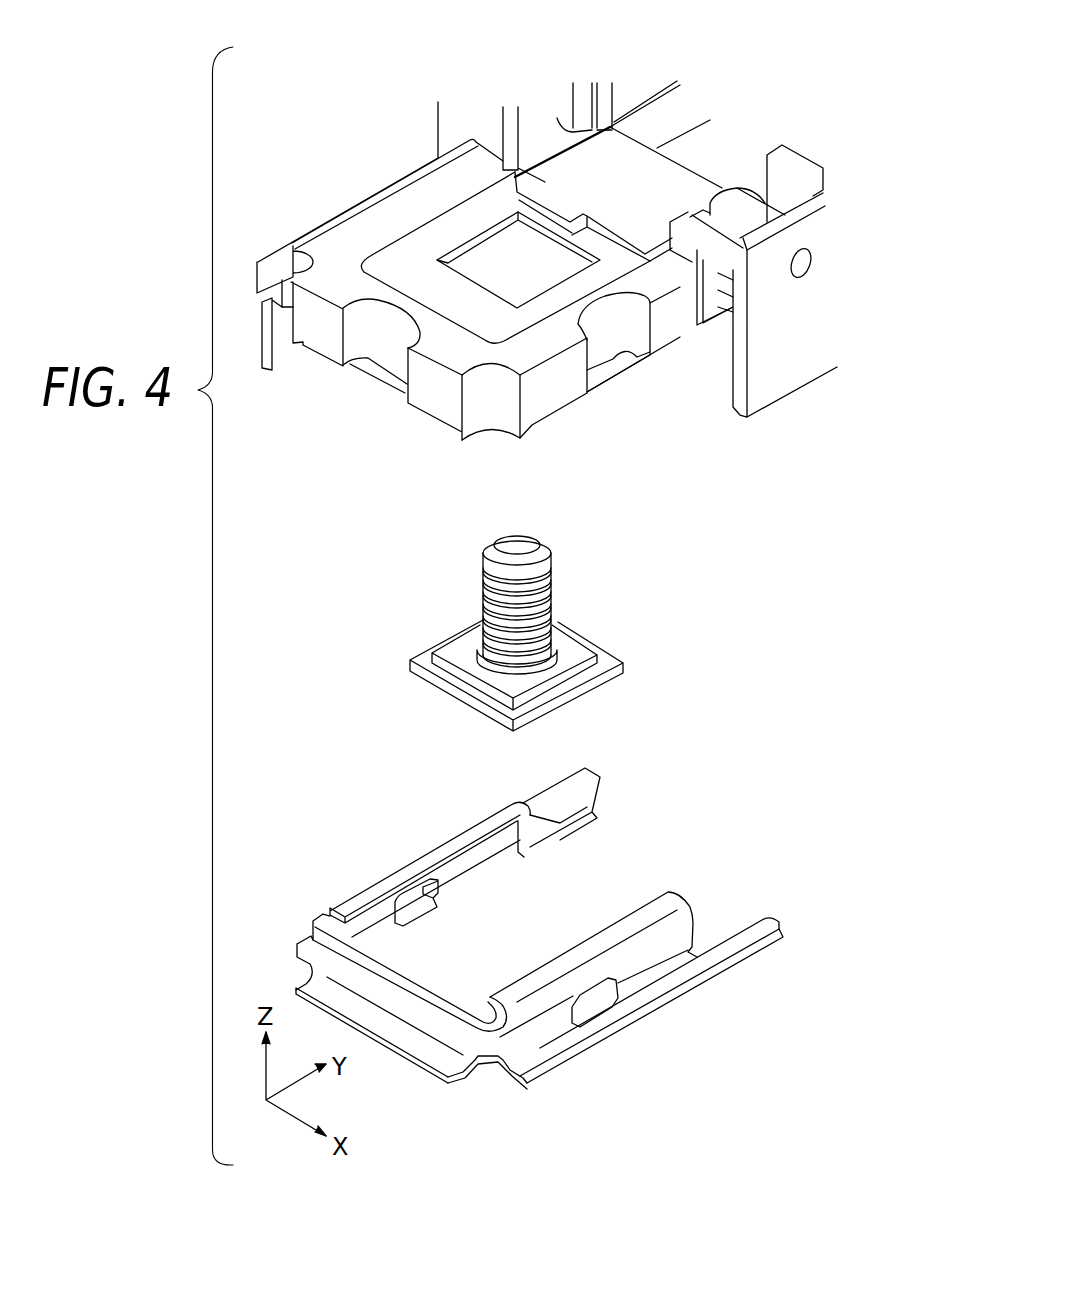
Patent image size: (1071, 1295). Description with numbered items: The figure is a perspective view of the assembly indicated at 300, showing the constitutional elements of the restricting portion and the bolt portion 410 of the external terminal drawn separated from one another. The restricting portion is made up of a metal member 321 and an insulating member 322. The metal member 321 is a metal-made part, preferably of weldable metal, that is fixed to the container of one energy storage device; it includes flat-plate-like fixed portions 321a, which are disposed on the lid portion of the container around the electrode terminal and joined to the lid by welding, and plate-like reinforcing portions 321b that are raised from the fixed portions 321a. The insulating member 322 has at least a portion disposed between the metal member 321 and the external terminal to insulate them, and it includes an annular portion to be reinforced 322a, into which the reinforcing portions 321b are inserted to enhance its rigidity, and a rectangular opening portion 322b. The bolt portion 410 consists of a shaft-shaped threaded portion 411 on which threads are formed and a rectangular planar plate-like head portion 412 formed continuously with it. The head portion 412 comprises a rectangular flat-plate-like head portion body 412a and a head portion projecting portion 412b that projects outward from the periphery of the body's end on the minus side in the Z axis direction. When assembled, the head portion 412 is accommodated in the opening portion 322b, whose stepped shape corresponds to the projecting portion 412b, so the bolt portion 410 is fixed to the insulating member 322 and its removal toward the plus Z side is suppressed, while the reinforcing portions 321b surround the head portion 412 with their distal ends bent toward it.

The connector assembly 300 is at (798, 78).
The insulating member 322 is at (600, 412).
The portion to be reinforced 322a is at (437, 400).
The opening portion 322b is at (547, 294).
The bolt portion 410 is at (608, 549).
The threaded portion 411 is at (537, 588).
The head portion 412 is at (347, 710).
The head portion body 412a is at (480, 667).
The head portion projecting portion 412b is at (482, 707).
The metal member 321 is at (722, 778).
The fixed portions 321a is at (576, 804).
The reinforcing portions 321b is at (483, 828).